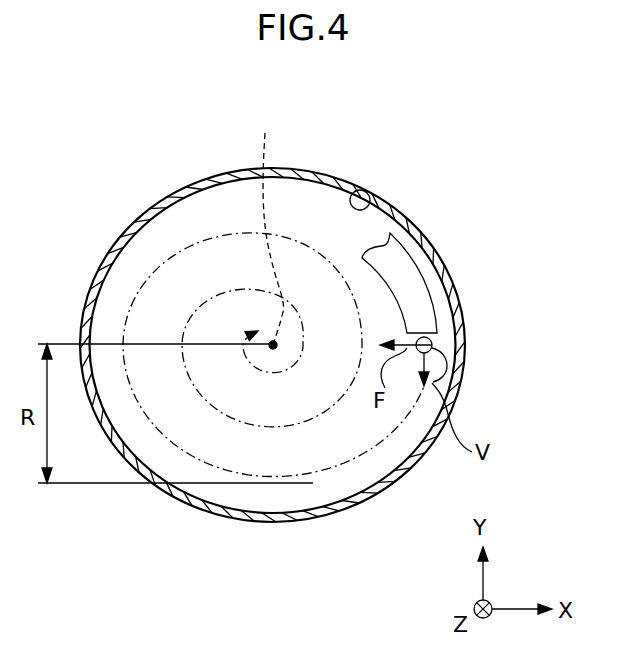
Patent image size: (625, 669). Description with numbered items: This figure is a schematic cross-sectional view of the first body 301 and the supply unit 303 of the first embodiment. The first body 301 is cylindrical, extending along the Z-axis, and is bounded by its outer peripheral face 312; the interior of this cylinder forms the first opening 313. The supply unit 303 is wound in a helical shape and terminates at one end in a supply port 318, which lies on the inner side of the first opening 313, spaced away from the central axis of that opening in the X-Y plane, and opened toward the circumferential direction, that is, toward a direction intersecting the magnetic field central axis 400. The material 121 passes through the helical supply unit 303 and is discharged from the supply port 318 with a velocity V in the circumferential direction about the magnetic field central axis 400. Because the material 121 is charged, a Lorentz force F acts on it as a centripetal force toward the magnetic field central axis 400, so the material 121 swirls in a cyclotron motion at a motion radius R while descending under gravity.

The first body 301 is at (412, 222).
The outer peripheral face 312 is at (445, 265).
The supply unit 303 is at (440, 303).
The first opening 313 is at (355, 190).
The supply port 318 is at (432, 344).
The material 121 is at (440, 365).
The magnetic field central axis 400 is at (263, 226).